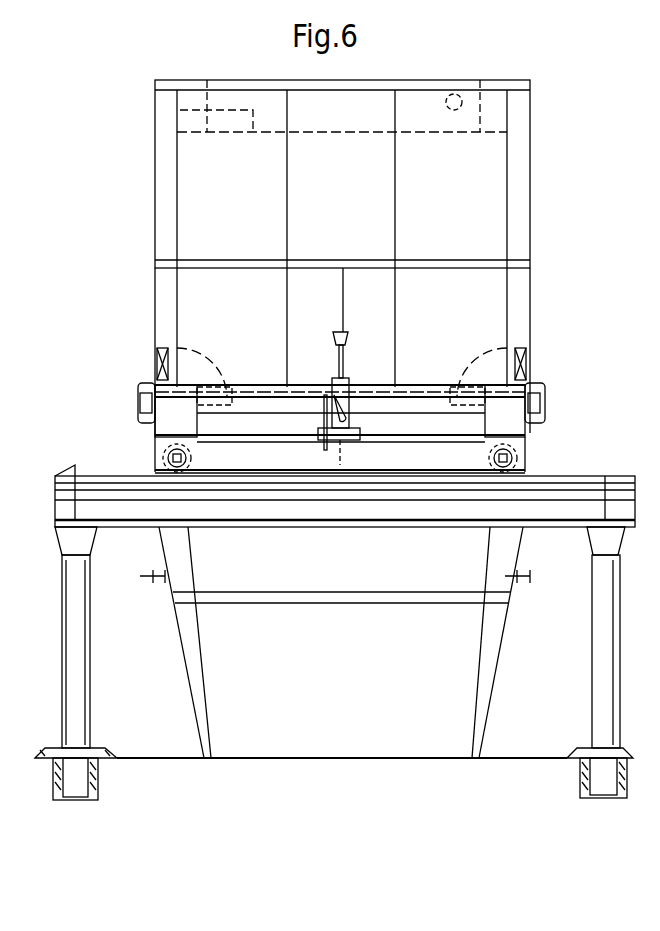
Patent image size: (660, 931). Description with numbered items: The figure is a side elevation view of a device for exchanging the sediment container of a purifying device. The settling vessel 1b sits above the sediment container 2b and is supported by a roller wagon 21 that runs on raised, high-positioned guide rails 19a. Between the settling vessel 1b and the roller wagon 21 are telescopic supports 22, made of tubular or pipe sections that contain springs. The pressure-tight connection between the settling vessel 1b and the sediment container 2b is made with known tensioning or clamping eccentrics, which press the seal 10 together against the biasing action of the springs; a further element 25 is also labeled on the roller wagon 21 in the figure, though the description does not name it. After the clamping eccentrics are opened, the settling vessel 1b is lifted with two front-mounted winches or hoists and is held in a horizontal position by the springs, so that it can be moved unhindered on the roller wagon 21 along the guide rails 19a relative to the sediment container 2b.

The settling vessel 1b is at (485, 178).
The sediment container 2b is at (492, 650).
The seal 10 is at (410, 388).
The guide rails 19a is at (95, 478).
The roller wagon 21 is at (522, 450).
The telescopic supports 22 is at (508, 405).
The locking pin 25 is at (339, 360).